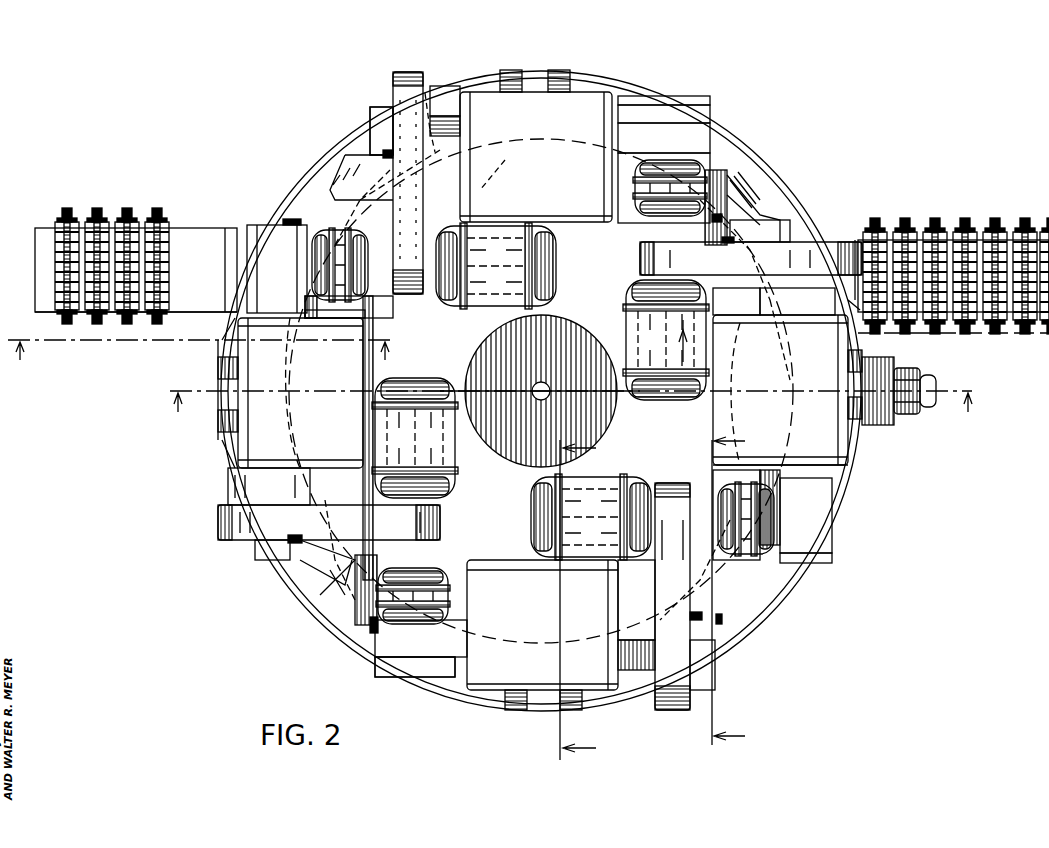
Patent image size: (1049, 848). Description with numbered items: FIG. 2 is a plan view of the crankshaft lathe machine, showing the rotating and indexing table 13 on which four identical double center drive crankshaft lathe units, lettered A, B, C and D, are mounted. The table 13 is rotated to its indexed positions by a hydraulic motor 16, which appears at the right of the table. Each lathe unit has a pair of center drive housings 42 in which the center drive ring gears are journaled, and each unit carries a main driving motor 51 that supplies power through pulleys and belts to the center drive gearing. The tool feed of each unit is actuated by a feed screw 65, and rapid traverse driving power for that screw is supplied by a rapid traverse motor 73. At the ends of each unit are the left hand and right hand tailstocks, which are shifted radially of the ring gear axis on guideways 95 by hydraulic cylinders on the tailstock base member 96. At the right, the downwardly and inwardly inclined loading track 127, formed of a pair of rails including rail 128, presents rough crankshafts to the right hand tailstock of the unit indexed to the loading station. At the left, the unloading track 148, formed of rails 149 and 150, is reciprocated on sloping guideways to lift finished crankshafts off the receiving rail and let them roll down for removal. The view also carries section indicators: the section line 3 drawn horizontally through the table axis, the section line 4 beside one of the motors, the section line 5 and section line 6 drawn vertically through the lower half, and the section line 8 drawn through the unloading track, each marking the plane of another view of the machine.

The section line 4 is at (681, 341).
The section line 5 is at (720, 591).
The section line 6 is at (571, 613).
The section line 8 is at (200, 339).
The section line 3 is at (563, 391).
The rotating and indexing table 13 is at (785, 438).
The hydraulic motor 16 is at (905, 408).
The center drive housings 42 is at (515, 72).
The main driving motor 51 is at (540, 391).
The feed screw 65 is at (390, 152).
The rapid traverse motor 73 is at (543, 392).
The guideways 95 is at (413, 170).
The tailstock base member 96 is at (458, 200).
The loading track 127 is at (1028, 210).
The rail 128 is at (1035, 318).
The unloading track 148 is at (44, 280).
The rail 149 is at (205, 312).
The rail 150 is at (212, 228).